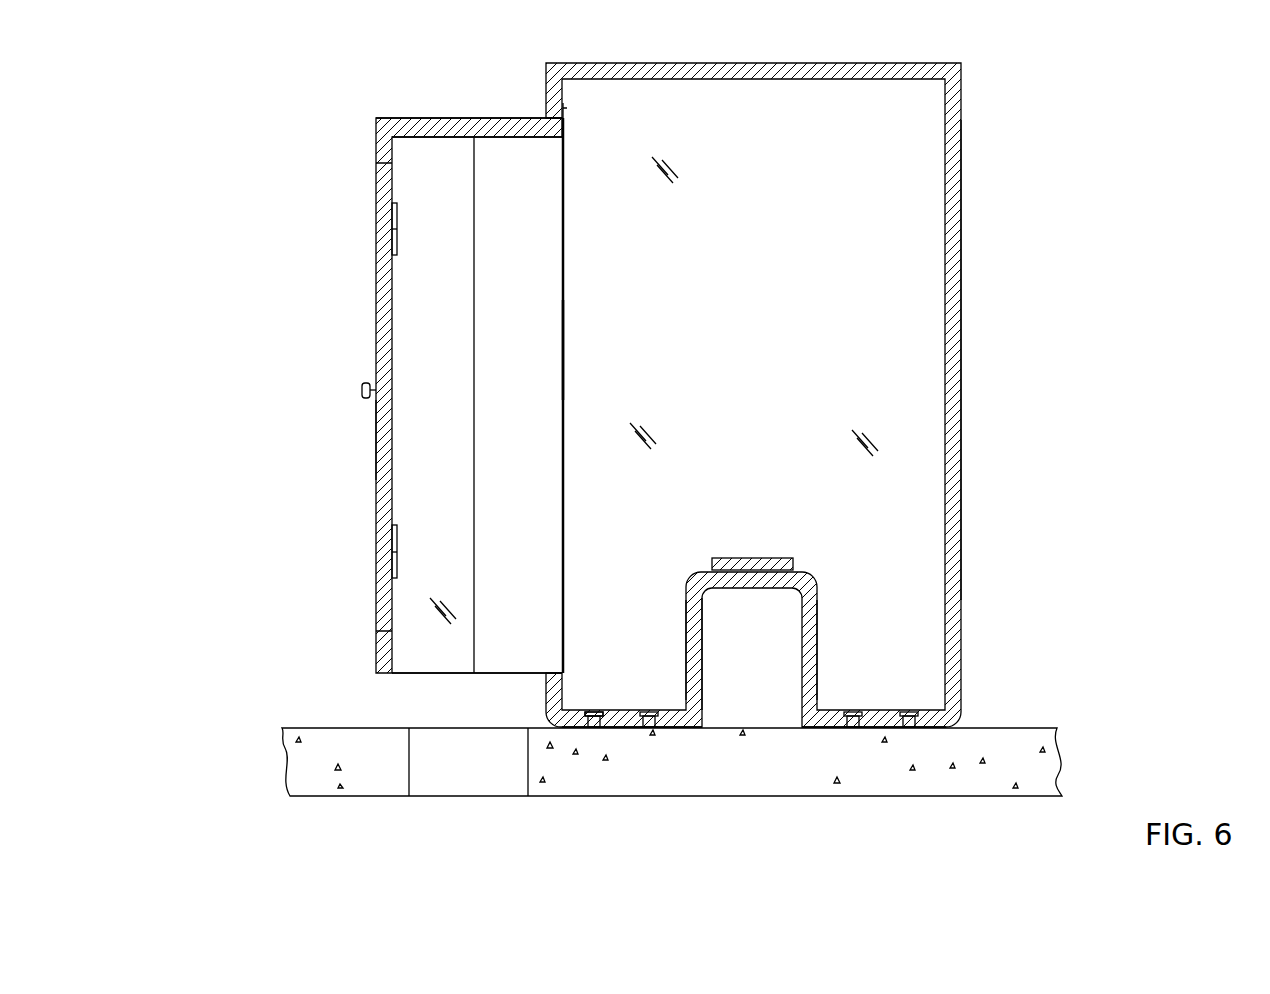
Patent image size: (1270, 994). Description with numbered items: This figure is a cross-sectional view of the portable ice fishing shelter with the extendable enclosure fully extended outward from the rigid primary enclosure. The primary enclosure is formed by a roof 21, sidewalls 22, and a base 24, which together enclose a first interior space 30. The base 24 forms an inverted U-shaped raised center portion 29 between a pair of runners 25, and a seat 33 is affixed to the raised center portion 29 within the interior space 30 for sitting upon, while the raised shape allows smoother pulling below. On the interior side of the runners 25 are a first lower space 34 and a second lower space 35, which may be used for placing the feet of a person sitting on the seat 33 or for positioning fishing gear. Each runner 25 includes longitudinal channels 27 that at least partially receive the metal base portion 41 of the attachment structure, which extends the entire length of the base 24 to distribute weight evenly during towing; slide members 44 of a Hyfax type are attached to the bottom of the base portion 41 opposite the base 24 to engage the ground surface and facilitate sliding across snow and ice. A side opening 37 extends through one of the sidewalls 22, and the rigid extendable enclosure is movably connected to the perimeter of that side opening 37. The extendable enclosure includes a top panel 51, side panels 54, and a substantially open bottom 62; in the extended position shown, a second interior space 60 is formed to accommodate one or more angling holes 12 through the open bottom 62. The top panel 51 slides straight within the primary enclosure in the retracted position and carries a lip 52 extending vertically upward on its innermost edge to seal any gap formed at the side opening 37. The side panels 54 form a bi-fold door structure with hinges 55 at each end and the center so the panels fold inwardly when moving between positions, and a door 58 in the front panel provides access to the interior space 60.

The angling holes 12 is at (460, 777).
The roof 21 is at (895, 63).
The sidewalls 22 is at (961, 330).
The base 24 is at (705, 700).
The runners 25 is at (668, 722).
The longitudinal channels 27 is at (670, 655).
The raised center portion 29 is at (747, 578).
The first interior space 30 is at (751, 226).
The seat 33 is at (755, 566).
The first lower space 34 is at (848, 600).
The second lower space 35 is at (655, 612).
The side opening 37 is at (563, 390).
The base portion 41 is at (598, 712).
The slide members 44 is at (595, 728).
The top panel 51 is at (455, 118).
The lip 52 is at (565, 110).
The side panels 54 is at (415, 347).
The hinges 55 is at (392, 233).
The door 58 is at (385, 462).
The second interior space 60 is at (428, 198).
The open bottom 62 is at (442, 673).